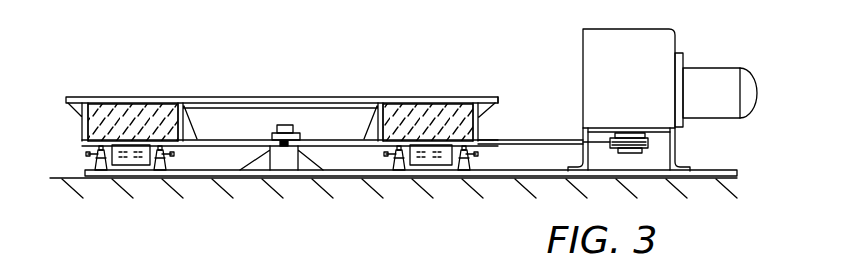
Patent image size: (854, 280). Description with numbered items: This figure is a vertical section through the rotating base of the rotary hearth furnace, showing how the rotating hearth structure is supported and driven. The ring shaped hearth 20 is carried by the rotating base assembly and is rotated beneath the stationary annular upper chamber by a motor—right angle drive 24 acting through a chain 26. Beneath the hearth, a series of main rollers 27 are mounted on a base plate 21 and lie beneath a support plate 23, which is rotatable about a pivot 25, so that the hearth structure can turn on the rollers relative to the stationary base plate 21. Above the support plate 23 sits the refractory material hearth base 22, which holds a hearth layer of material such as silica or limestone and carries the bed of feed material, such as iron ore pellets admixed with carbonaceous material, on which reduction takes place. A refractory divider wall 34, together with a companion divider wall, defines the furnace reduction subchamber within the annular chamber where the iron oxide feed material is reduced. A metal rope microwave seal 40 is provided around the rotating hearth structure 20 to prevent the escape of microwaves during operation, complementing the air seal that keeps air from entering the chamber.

The ring shaped hearth 20 is at (60, 118).
The base plate 21 is at (700, 175).
The refractory material hearth base 22 is at (130, 100).
The support plate 23 is at (229, 137).
The motor—right angle drive 24 is at (650, 43).
The pivot 25 is at (270, 140).
The chain 26 is at (522, 140).
The main rollers 27 is at (83, 161).
The refractory divider wall 34 is at (475, 98).
The metal rope microwave seal 40 is at (485, 98).